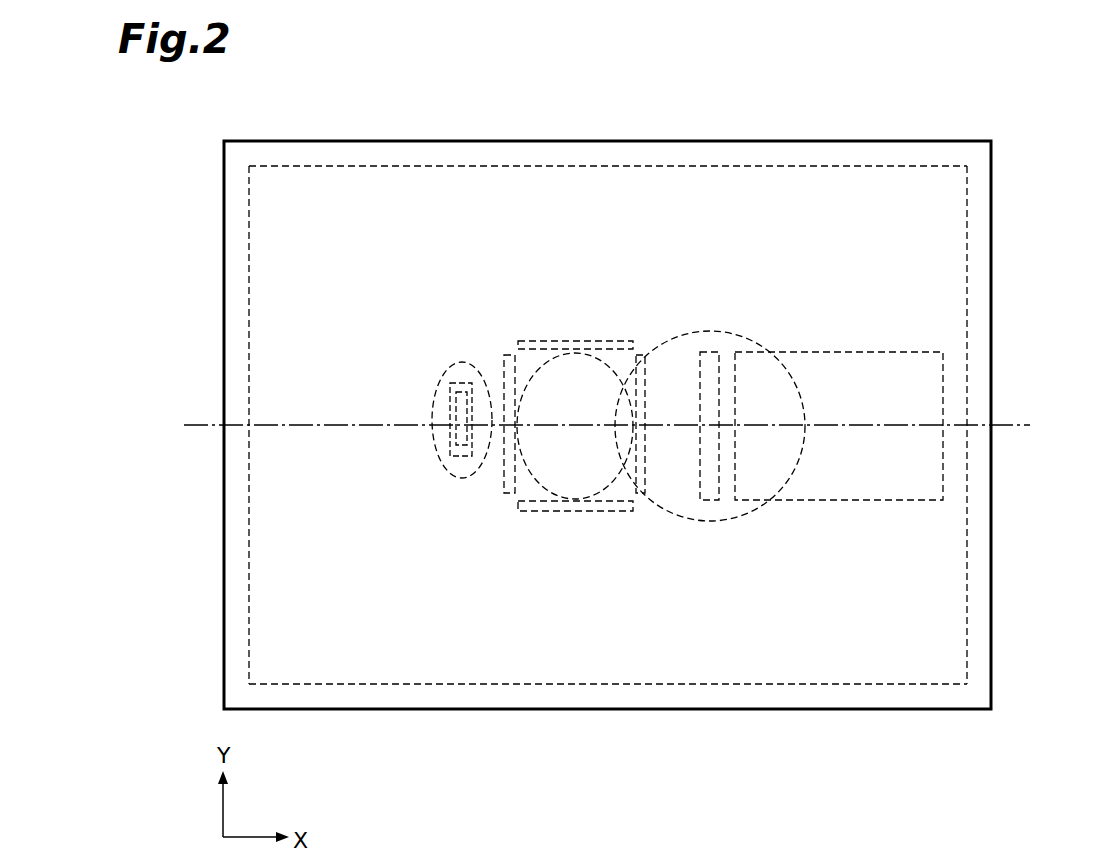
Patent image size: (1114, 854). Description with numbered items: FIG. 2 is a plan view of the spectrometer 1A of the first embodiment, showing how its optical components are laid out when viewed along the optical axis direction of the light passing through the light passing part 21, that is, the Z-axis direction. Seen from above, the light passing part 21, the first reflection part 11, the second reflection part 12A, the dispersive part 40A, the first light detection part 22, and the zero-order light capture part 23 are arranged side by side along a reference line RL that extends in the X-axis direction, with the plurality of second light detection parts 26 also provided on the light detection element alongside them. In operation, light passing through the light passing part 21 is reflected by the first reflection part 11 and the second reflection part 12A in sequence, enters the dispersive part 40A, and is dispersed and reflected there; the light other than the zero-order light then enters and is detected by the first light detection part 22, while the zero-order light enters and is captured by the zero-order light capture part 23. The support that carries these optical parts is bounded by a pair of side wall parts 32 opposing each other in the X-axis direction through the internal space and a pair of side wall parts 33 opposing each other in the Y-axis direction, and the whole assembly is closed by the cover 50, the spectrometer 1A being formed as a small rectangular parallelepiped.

The spectrometer 1A is at (897, 114).
The cover 50 is at (1000, 250).
The side wall parts 32 is at (230, 458).
The side wall parts 33 is at (607, 150).
The reference line RL is at (202, 423).
The light passing part 21 is at (463, 400).
The first reflection part 11 is at (456, 480).
The second light detection parts 26 is at (535, 342).
The second reflection part 12A is at (577, 350).
The dispersive part 40A is at (707, 521).
The zero-order light capture part 23 is at (713, 352).
The first light detection part 22 is at (845, 352).